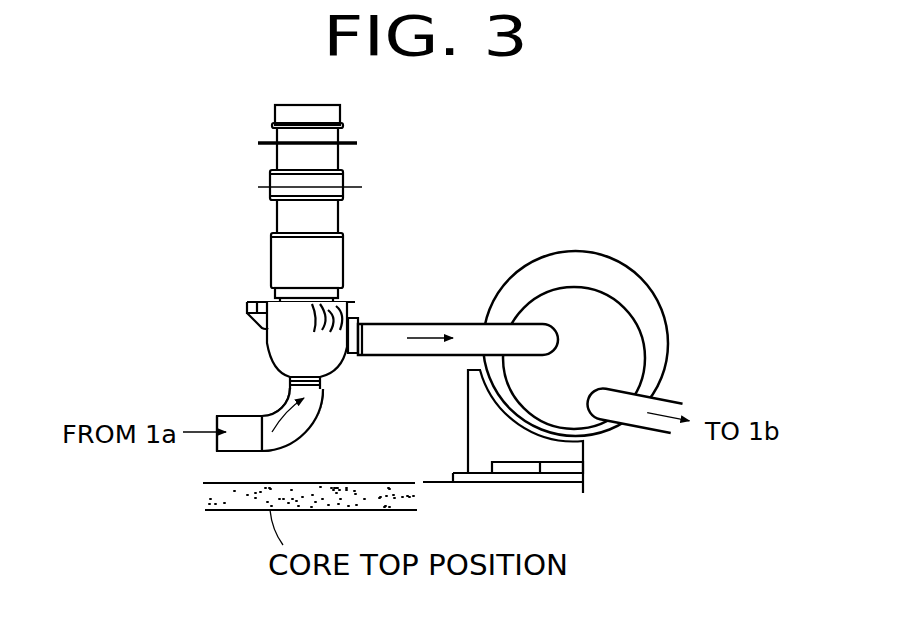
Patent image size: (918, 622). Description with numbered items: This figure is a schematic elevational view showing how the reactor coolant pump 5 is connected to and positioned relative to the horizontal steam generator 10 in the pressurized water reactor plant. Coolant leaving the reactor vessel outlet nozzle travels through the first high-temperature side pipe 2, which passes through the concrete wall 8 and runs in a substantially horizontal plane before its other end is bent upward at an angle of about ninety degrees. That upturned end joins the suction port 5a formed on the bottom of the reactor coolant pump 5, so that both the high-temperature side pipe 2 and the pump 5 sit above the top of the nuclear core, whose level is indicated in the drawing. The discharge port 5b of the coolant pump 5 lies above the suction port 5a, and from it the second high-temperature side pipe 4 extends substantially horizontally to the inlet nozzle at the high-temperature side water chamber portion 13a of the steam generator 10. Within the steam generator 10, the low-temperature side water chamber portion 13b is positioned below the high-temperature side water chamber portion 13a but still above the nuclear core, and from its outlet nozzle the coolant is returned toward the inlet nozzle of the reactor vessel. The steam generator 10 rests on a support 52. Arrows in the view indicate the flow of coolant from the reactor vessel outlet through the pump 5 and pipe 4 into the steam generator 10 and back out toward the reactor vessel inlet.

The first high-temperature side pipe 2 is at (228, 416).
The second high-temperature side pipe 4 is at (438, 324).
The reactor coolant pump 5 is at (244, 141).
The suction port 5a is at (323, 380).
The discharge port 5b is at (360, 323).
The concrete wall 8 is at (228, 490).
The horizontal steam generator 10 is at (578, 245).
The high-temperature side water chamber portion 13a is at (535, 310).
The low-temperature side water chamber portion 13b is at (633, 367).
The support 52 is at (487, 445).